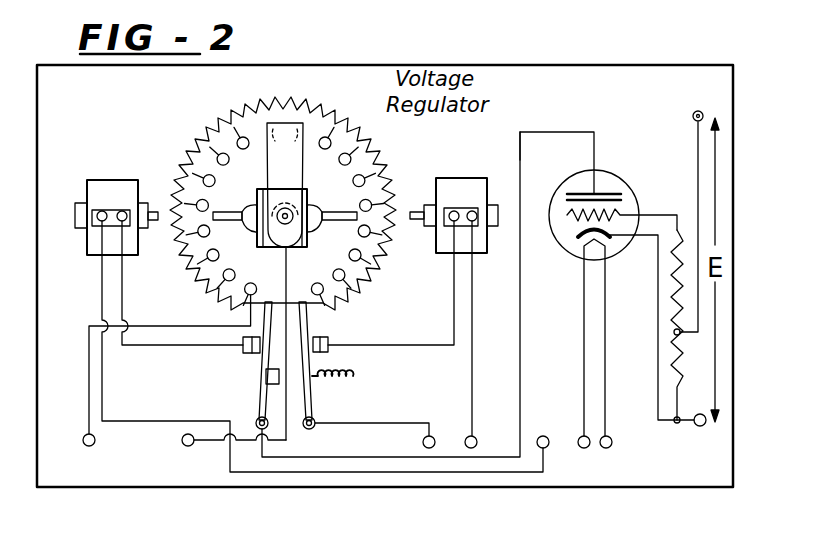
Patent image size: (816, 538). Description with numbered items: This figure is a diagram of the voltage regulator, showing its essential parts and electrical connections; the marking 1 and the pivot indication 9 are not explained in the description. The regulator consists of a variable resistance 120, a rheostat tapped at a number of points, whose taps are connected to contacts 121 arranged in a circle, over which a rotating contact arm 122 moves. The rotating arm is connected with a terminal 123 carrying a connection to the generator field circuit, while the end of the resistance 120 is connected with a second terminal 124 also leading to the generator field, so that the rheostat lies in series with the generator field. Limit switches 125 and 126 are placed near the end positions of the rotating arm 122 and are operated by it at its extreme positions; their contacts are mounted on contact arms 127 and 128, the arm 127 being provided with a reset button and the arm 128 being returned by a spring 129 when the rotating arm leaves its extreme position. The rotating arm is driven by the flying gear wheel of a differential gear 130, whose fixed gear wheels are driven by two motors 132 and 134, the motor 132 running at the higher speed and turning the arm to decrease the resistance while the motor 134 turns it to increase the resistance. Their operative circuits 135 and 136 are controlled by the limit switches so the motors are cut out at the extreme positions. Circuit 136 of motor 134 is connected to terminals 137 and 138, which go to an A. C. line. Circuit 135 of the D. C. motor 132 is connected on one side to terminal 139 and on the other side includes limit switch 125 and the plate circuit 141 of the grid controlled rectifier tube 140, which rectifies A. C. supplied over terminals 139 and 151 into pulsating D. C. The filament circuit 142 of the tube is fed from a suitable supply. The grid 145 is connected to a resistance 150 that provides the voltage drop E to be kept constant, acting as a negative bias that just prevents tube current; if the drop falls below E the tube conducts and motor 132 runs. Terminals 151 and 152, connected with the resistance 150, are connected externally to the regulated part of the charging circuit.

The station indicator / pointer 1 is at (284, 158).
The pointer pivot 9 is at (290, 247).
The variable resistance 120 is at (222, 134).
The contacts 121 is at (219, 257).
The rotating contact arm 122 is at (346, 216).
The terminal 123 is at (266, 380).
The second terminal 124 is at (90, 446).
The limit switch 125 is at (252, 354).
The limit switch 126 is at (316, 355).
The contact arm 127 is at (258, 406).
The contact arm 128 is at (313, 414).
The spring 129 is at (352, 378).
The differential gear 130 is at (253, 205).
The motor 132 is at (106, 180).
The motor 134 is at (462, 178).
The operative circuit 135 is at (170, 364).
The operative circuit 136 is at (472, 404).
The terminal 137 is at (428, 448).
The terminal 138 is at (471, 448).
The terminal 139 is at (545, 448).
The grid controlled rectifier tube 140 is at (571, 249).
The plate circuit 141 is at (550, 131).
The filament circuit 142 is at (585, 355).
The grid 145 is at (633, 210).
The resistance 150 is at (684, 367).
The terminal 151 is at (706, 422).
The terminal 152 is at (703, 113).